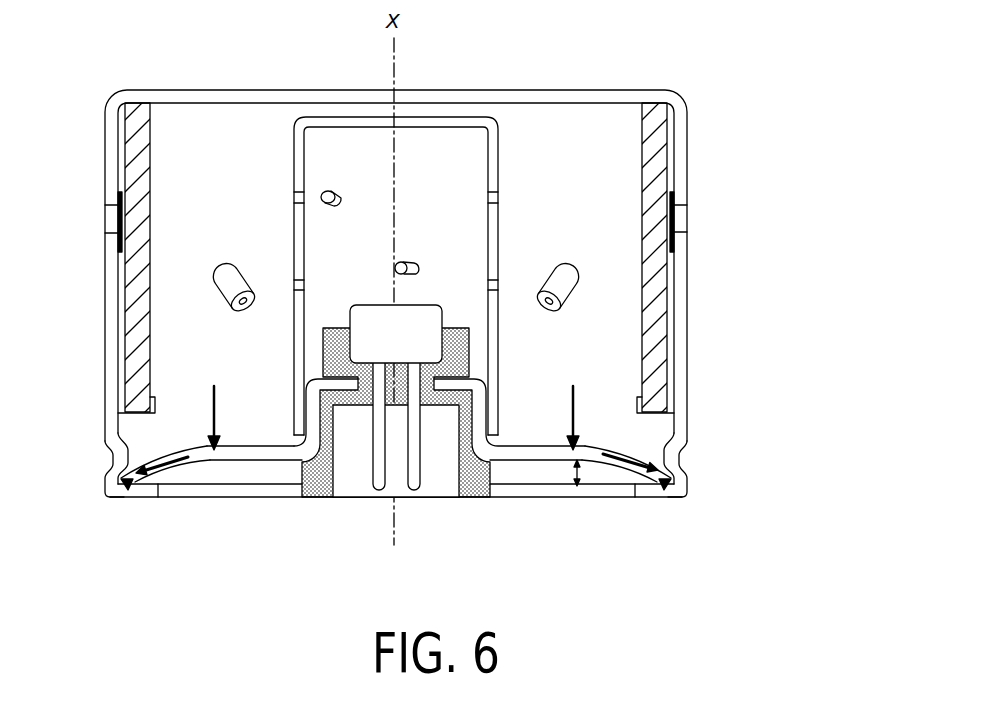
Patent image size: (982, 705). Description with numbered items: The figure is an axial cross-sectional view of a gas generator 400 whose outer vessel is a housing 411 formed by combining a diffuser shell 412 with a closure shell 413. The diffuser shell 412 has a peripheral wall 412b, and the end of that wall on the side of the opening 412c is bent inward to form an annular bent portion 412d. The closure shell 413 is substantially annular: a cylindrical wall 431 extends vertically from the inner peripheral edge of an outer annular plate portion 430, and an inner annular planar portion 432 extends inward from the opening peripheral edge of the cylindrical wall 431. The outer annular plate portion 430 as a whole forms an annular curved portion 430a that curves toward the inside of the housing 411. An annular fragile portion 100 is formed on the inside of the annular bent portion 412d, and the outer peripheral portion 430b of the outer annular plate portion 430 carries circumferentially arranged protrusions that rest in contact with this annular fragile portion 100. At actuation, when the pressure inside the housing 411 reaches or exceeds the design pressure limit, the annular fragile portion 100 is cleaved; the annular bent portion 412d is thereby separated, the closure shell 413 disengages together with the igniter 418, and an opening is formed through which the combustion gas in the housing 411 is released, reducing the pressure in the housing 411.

The gas generator 400 is at (526, 72).
The housing 411 is at (776, 500).
The diffuser shell 412 is at (688, 442).
The peripheral wall 412b is at (687, 171).
The opening 412c is at (522, 495).
The annular bent portion 412d is at (135, 497).
The closure shell 413 is at (607, 463).
The igniter 418 is at (421, 344).
The outer annular plate portion 430 is at (252, 461).
The annular curved portion 430a is at (252, 425).
The outer peripheral portion 430b is at (123, 478).
The cylindrical wall 431 is at (312, 417).
The inner annular planar portion 432 is at (341, 368).
The annular fragile portion 100 is at (125, 486).